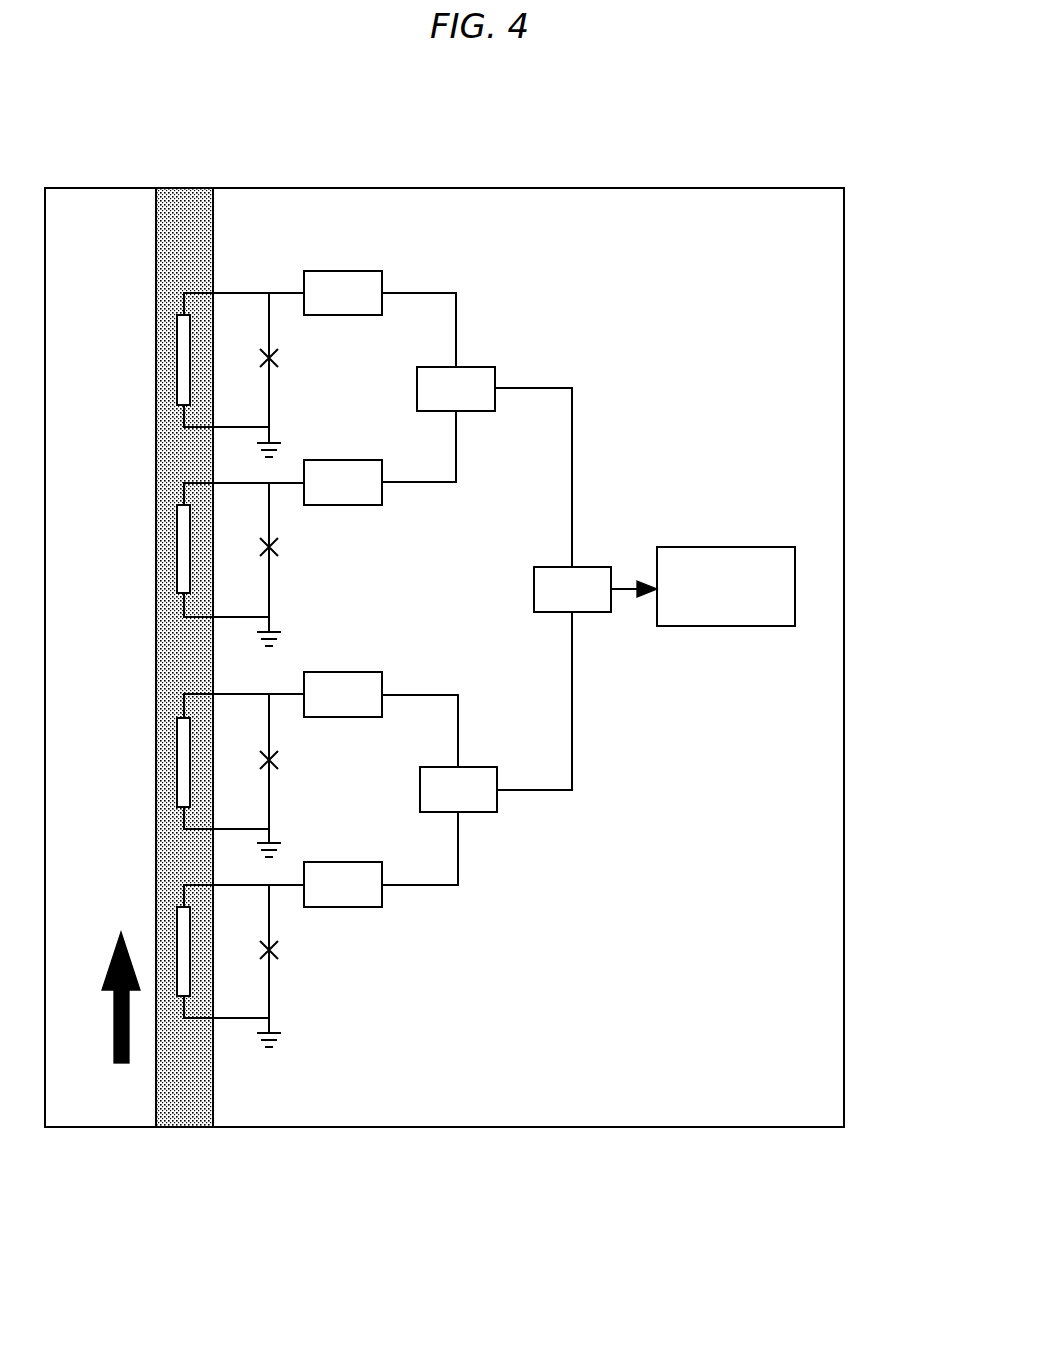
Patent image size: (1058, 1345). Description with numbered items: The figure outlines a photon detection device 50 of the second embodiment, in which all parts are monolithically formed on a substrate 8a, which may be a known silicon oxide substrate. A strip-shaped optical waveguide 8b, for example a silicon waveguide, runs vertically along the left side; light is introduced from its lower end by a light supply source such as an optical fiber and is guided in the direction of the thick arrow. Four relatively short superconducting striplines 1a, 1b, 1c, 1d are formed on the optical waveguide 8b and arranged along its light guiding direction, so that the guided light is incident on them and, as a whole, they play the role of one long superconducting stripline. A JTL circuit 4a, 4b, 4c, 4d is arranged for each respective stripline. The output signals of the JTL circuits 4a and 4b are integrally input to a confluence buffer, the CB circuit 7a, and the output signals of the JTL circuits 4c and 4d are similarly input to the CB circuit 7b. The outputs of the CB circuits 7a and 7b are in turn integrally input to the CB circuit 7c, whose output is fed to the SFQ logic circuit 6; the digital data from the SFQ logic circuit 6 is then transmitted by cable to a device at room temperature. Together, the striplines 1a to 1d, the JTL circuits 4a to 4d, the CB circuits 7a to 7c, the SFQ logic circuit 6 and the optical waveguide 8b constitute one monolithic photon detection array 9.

The superconducting stripline 1a is at (184, 366).
The superconducting stripline 1b is at (184, 555).
The superconducting stripline 1c is at (182, 768).
The superconducting stripline 1d is at (182, 920).
The JTL circuit 4a is at (346, 270).
The JTL circuit 4b is at (346, 460).
The JTL circuit 4c is at (350, 672).
The JTL circuit 4d is at (348, 862).
The SFQ logic circuit 6 is at (720, 547).
The CB circuit 7a is at (474, 367).
The CB circuit 7b is at (476, 767).
The CB circuit 7c is at (584, 567).
The substrate 8a is at (736, 208).
The optical waveguide 8b is at (188, 210).
The monolithic photon detection array 9 is at (510, 870).
The photon detection device 50 is at (868, 568).